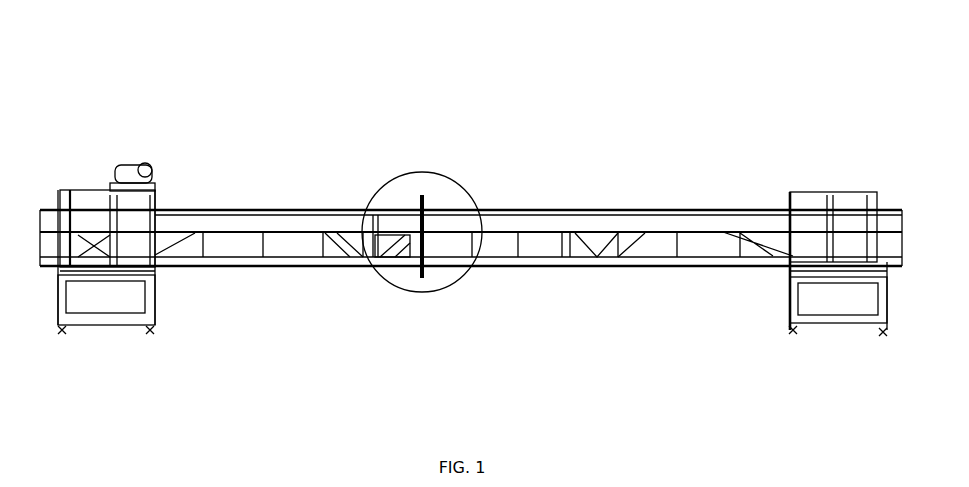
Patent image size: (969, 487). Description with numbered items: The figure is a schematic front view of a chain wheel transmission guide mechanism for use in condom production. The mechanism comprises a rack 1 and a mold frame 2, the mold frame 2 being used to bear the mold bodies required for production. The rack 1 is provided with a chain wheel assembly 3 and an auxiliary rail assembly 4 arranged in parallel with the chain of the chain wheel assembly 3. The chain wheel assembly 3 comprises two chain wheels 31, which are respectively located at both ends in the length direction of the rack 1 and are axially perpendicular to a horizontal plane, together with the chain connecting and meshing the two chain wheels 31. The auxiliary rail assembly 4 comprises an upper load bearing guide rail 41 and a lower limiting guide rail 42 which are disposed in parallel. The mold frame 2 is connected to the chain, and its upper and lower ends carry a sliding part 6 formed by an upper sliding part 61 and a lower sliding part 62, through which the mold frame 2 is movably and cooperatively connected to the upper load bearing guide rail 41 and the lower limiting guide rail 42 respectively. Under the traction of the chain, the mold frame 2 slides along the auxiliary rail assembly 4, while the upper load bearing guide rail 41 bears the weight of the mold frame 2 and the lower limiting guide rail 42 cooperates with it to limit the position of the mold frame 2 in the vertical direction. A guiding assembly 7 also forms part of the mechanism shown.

The rack 1 is at (793, 326).
The mold frame 2 is at (434, 224).
The chain wheel assembly 3 is at (70, 207).
The chain wheel 31 is at (47, 213).
The auxiliary rail assembly 4 is at (282, 59).
The upper load bearing guide rail 41 is at (182, 206).
The lower limiting guide rail 42 is at (340, 266).
The sliding part 6 is at (467, 59).
The upper sliding part 61 is at (420, 197).
The lower sliding part 62 is at (422, 200).
The guiding assembly 7 is at (660, 233).